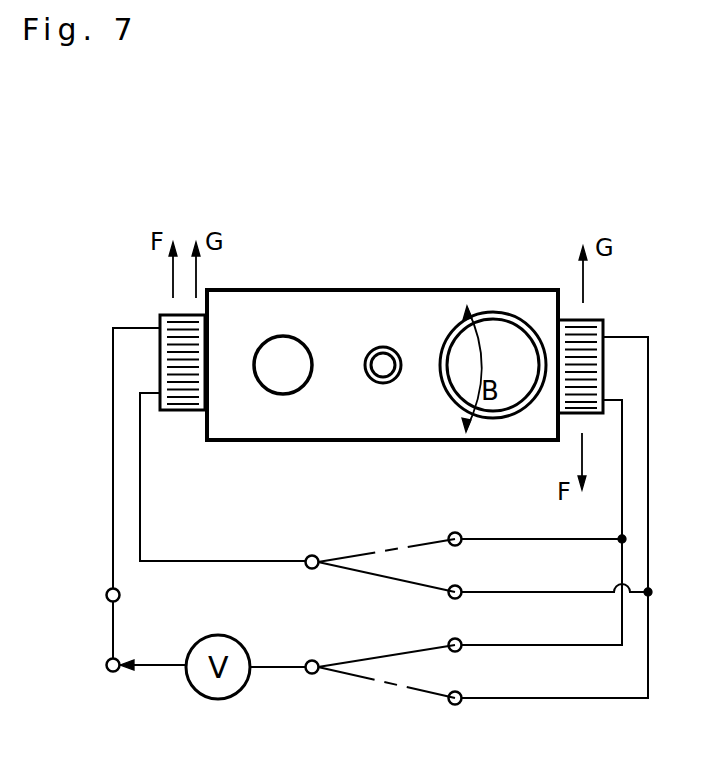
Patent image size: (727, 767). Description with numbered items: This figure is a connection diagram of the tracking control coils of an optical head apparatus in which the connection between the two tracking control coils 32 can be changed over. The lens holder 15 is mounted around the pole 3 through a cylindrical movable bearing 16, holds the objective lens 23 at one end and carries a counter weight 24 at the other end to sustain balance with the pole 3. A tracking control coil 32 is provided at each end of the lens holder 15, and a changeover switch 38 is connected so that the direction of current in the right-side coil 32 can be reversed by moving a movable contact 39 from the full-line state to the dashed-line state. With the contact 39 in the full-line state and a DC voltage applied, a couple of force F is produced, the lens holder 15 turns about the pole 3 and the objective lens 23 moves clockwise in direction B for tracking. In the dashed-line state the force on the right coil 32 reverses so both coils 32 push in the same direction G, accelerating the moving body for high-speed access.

The pole 3 is at (379, 370).
The lens holder 15 is at (322, 440).
The movable bearing 16 is at (383, 383).
The objective lens 23 is at (502, 340).
The counter weight 24 is at (284, 345).
The tracking control coil 32 is at (176, 405).
The changeover switch 38 is at (352, 570).
The movable contact 39 is at (413, 578).